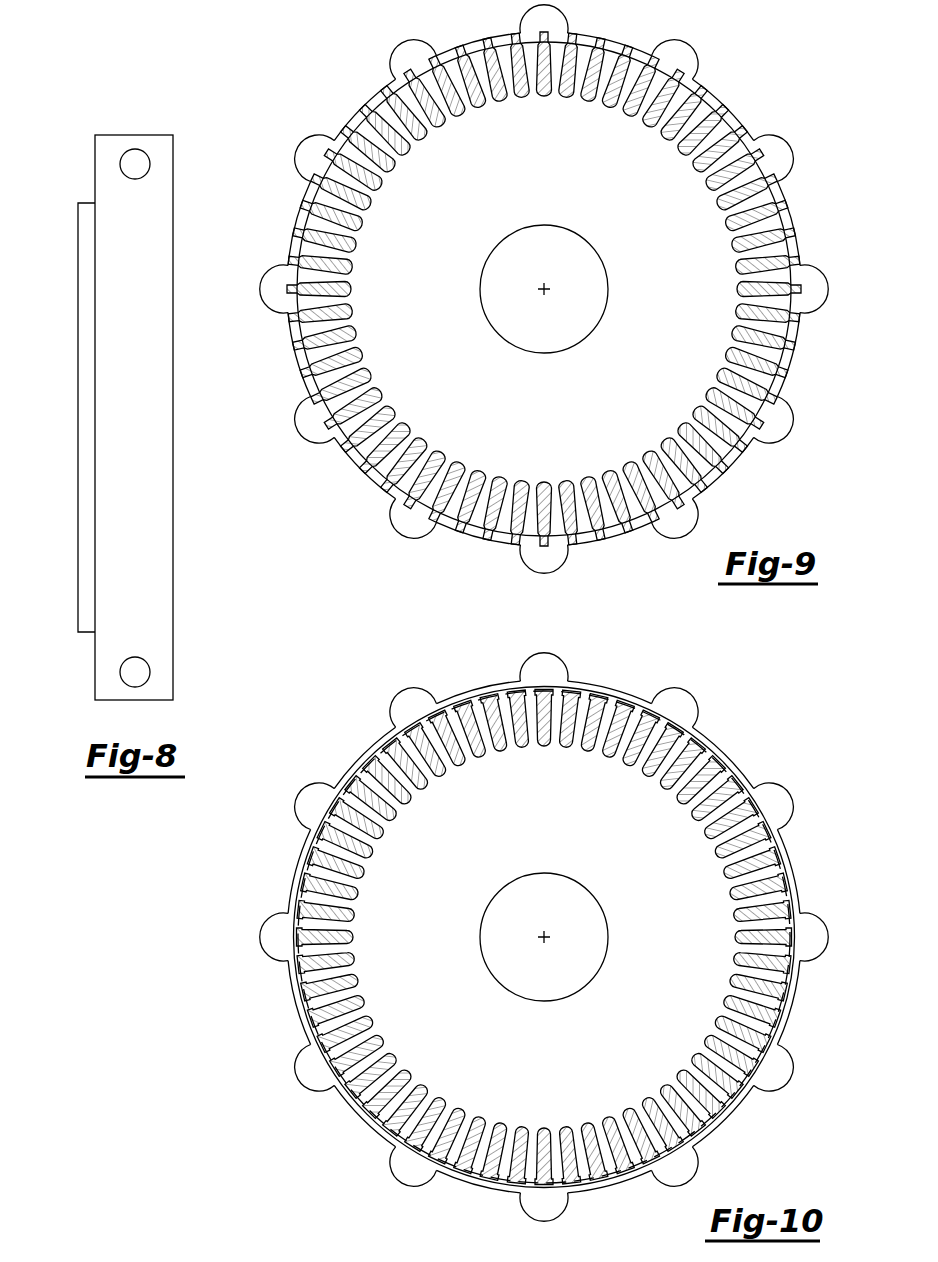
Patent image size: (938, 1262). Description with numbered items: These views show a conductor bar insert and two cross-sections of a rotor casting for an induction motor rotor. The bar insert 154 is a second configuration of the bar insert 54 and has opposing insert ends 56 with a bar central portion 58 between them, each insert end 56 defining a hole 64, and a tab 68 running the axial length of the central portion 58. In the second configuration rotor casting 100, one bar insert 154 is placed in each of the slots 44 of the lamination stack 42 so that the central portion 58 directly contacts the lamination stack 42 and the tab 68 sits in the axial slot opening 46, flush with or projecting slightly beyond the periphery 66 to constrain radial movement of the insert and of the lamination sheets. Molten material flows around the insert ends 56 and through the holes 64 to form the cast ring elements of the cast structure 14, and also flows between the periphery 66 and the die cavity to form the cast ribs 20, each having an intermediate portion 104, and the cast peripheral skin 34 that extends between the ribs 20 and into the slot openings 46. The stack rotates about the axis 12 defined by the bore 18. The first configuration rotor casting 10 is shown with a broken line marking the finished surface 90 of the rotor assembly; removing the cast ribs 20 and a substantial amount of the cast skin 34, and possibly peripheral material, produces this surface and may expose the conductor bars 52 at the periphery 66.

In FIG. 10, the rotor casting 10 is at (535, 936).
In FIG. 9, the rotor casting 100 is at (531, 302).
In FIG. 9, the axis 12 is at (545, 291).
In FIG. 10, the axis 12 is at (545, 939).
In FIG. 9, the cast structure 14 is at (531, 302).
In FIG. 10, the cast structure 14 is at (535, 943).
In FIG. 9, the bore 18 is at (508, 312).
In FIG. 10, the bore 18 is at (508, 960).
In FIG. 9, the cast ribs 20 is at (780, 138).
In FIG. 10, the cast ribs 20 is at (300, 815).
In FIG. 9, the intermediate portion 104 is at (517, 289).
In FIG. 10, the intermediate portion 104 is at (535, 946).
In FIG. 9, the cast peripheral skin 34 is at (800, 232).
In FIG. 10, the cast peripheral skin 34 is at (294, 870).
In FIG. 9, the lamination stack 42 is at (533, 180).
In FIG. 10, the lamination stack 42 is at (533, 827).
In FIG. 9, the slots 44 is at (544, 302).
In FIG. 10, the slots 44 is at (545, 937).
In FIG. 9, the axial slot opening 46 is at (544, 302).
In FIG. 10, the axial slot opening 46 is at (405, 1158).
In FIG. 10, the conductor bars 52 is at (545, 937).
In FIG. 10, the bar insert 54 is at (545, 937).
In FIG. 8, the insert ends 56 is at (119, 420).
In FIG. 8, the bar central portion 58 is at (57, 417).
In FIG. 8, the holes 64 is at (135, 164).
In FIG. 9, the peripheral surface 66 is at (790, 332).
In FIG. 10, the peripheral surface 66 is at (757, 790).
In FIG. 8, the tab 68 is at (57, 417).
In FIG. 9, the tab 68 is at (544, 302).
In FIG. 10, the finished surface 90 is at (728, 735).
In FIG. 8, the bar insert 154 is at (72, 503).
In FIG. 9, the bar insert 154 is at (748, 313).